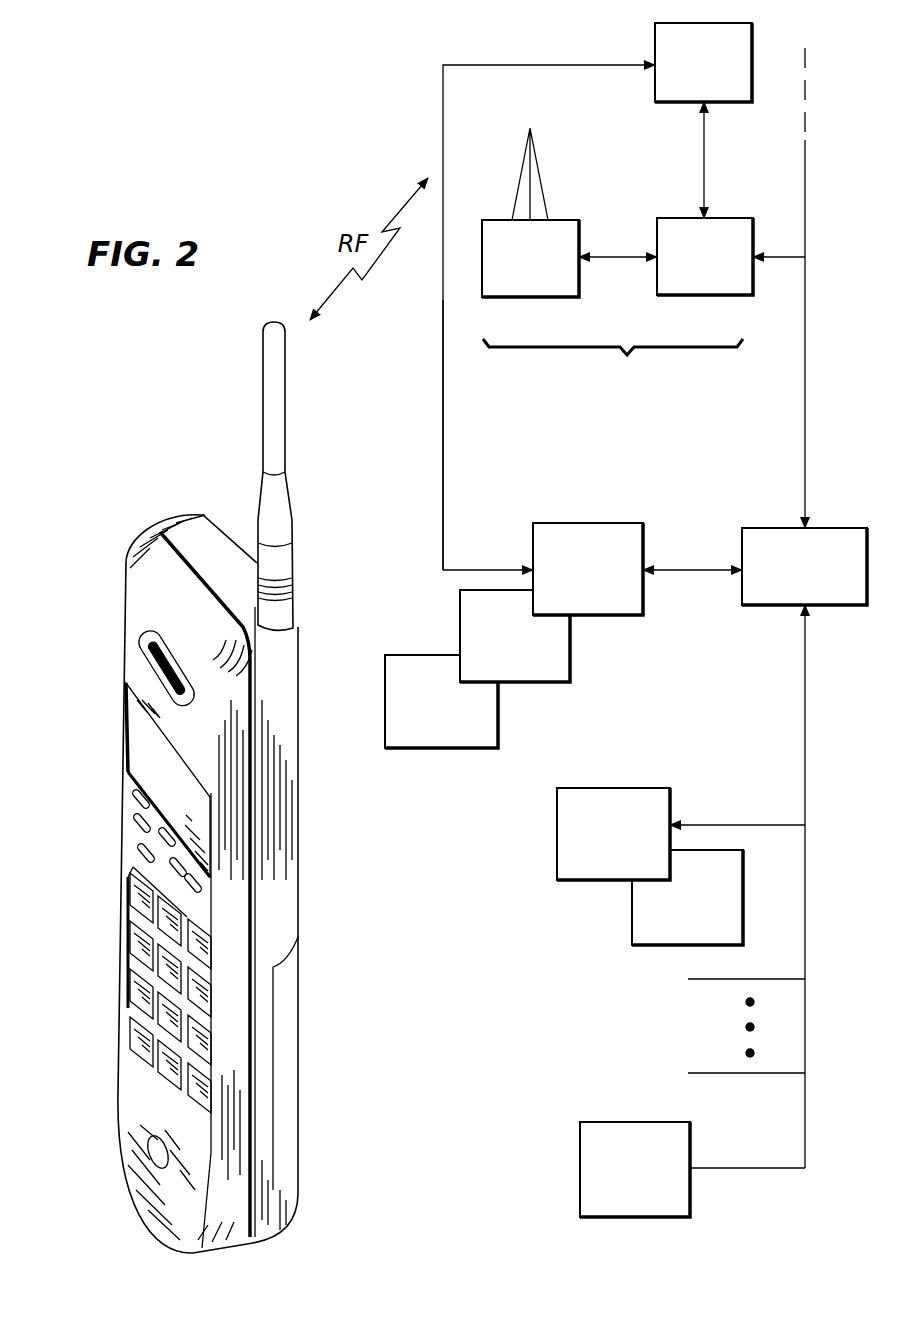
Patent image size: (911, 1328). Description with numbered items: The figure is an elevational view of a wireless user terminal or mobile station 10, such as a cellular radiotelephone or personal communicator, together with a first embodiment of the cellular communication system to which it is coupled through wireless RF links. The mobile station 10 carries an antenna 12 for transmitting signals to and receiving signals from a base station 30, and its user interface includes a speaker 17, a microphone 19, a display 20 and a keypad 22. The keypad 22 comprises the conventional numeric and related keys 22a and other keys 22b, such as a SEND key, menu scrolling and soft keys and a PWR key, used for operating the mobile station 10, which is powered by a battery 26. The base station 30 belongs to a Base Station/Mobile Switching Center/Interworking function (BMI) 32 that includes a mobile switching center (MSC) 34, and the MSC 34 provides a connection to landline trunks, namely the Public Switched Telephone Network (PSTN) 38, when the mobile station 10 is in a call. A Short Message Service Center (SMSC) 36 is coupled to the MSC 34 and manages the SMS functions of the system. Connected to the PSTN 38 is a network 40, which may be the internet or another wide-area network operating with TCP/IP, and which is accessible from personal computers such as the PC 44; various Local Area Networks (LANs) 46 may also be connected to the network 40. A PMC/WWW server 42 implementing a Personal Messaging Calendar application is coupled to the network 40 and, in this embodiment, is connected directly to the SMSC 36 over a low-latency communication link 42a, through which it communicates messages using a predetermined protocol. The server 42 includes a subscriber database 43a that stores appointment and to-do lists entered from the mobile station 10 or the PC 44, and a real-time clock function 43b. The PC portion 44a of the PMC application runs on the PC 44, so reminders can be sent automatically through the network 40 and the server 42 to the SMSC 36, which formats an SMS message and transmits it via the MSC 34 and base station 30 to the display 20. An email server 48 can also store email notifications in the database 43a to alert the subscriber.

The mobile station 10 is at (102, 518).
The antenna 12 is at (272, 412).
The speaker 17 is at (160, 652).
The microphone 19 is at (153, 1153).
The display 20 is at (145, 757).
The keypad 22 is at (210, 1017).
The numeric and related keys 22a is at (128, 1008).
The other keys 22b is at (140, 848).
The battery 26 is at (287, 1108).
The base station 30 is at (522, 297).
The Base Station/Mobile Switching Center/Interworking function (BMI) 32 is at (613, 377).
The mobile switching center (MSC) 34 is at (682, 295).
The Short Message Service Center (SMSC) 36 is at (676, 104).
The Public Switched Telephone Network (PSTN) 38 is at (805, 478).
The network 40 is at (765, 607).
The WWW server 42 is at (602, 615).
The low-latency communication link 42a is at (443, 478).
The subscriber database 43a is at (540, 682).
The real-time clock function 43b is at (455, 748).
The personal computer (PC) 44 is at (598, 880).
The PC portion of the PMC application 44a is at (650, 945).
The Local Area Network (LAN) 46 is at (696, 1026).
The email server 48 is at (580, 1152).